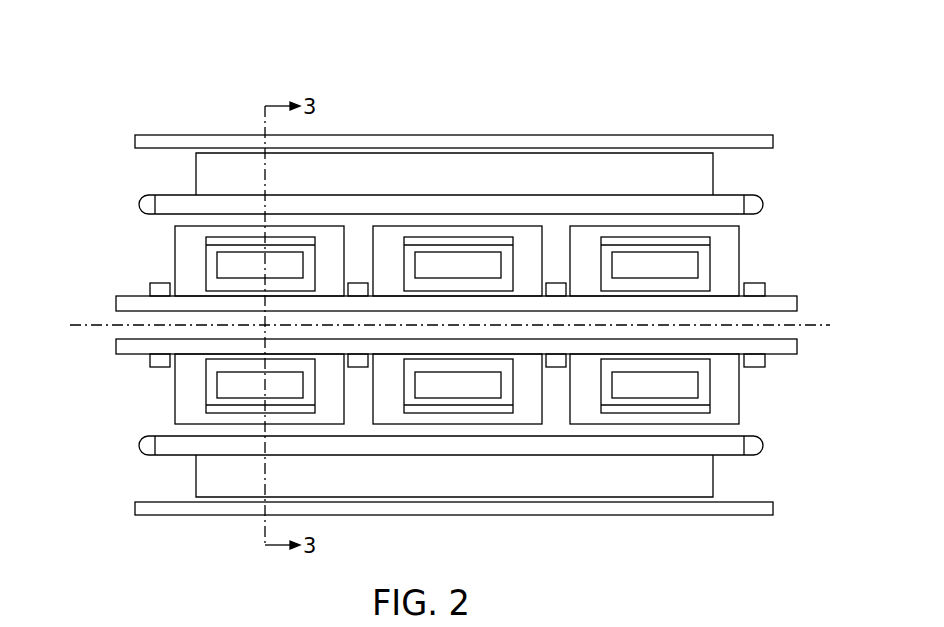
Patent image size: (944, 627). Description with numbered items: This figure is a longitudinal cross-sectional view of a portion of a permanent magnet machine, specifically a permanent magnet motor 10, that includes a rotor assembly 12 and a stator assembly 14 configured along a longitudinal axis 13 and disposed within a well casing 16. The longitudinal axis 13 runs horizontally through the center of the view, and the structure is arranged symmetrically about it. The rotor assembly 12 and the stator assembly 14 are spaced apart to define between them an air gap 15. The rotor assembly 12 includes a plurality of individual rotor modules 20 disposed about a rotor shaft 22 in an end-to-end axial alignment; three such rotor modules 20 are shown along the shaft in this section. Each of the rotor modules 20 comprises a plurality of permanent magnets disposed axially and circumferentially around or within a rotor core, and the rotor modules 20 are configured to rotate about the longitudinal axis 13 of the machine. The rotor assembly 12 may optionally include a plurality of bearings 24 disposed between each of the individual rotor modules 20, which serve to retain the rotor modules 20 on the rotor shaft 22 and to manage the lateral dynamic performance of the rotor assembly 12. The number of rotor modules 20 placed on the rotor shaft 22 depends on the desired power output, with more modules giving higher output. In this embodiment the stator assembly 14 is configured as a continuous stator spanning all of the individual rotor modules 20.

The permanent magnet motor 10 is at (88, 66).
The rotor assembly 12 is at (812, 260).
The longitudinal axis 13 is at (80, 323).
The stator assembly 14 is at (90, 200).
The air gap 15 is at (750, 223).
The well casing 16 is at (565, 142).
The rotor modules 20 is at (725, 258).
The rotor shaft 22 is at (786, 296).
The bearings 24 is at (150, 291).